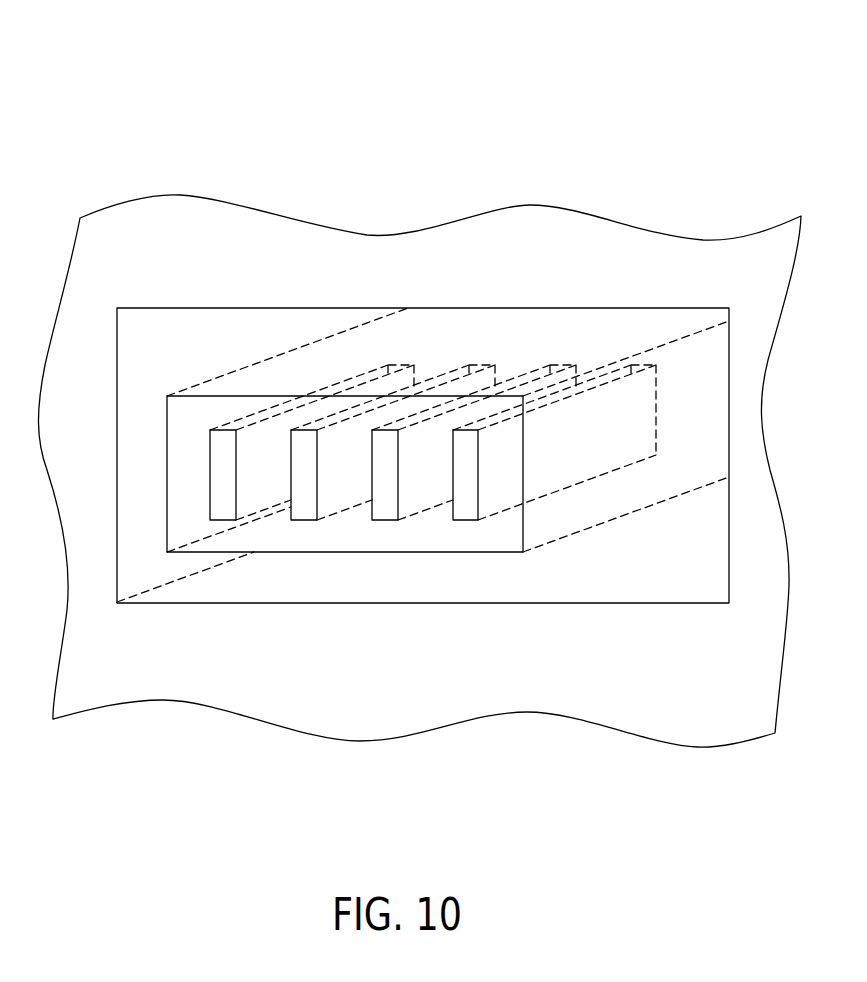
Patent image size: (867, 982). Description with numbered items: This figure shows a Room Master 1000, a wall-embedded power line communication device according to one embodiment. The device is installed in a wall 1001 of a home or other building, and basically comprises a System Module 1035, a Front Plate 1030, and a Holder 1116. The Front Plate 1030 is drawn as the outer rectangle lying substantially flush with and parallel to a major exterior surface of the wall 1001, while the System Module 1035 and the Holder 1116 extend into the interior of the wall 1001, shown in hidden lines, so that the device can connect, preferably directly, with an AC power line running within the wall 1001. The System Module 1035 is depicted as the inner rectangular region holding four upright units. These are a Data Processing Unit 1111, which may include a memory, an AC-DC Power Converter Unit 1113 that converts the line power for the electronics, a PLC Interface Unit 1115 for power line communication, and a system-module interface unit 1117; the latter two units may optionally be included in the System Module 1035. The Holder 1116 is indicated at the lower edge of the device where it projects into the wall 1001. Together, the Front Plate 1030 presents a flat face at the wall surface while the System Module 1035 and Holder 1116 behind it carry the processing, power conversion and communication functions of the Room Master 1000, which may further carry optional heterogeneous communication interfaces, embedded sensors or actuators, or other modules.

The electrical connector assembly 1000 is at (690, 85).
The wall 1001 is at (648, 253).
The Front Plate 1030 is at (420, 603).
The System Module 1035 is at (533, 520).
The Holder 1116 is at (218, 562).
The Data Processing Unit 1111 is at (223, 430).
The AC-DC Power Converter Unit 1113 is at (302, 430).
The PLC Interface Unit 1115 is at (384, 430).
The system-module interface unit 1117 is at (464, 430).